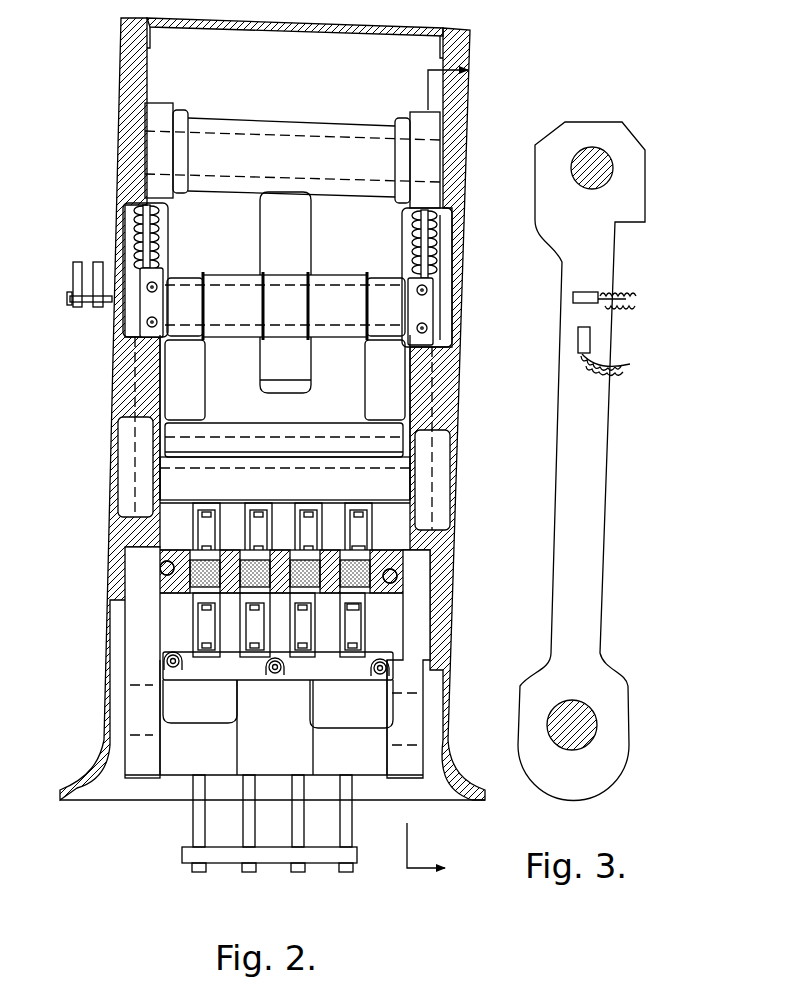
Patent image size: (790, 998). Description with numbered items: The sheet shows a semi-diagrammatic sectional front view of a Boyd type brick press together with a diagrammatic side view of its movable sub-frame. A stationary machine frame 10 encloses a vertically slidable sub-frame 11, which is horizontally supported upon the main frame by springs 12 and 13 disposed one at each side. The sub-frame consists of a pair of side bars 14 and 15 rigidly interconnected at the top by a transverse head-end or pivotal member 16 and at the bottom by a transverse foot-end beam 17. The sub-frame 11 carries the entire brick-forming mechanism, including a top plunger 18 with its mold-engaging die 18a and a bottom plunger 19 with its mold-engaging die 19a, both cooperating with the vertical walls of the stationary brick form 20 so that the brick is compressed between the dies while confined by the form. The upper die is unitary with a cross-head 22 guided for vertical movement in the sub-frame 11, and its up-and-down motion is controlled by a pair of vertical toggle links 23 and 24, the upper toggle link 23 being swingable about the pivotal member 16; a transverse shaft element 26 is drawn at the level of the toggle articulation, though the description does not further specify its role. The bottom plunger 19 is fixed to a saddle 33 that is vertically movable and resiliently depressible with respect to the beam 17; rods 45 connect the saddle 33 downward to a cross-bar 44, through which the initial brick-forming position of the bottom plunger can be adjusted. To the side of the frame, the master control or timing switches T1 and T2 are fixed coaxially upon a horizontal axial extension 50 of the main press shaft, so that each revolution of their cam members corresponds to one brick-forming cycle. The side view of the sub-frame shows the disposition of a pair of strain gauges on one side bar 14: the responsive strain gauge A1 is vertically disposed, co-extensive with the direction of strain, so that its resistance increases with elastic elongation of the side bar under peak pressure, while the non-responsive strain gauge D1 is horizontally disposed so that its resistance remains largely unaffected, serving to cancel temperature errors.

In FIG. 2, the machine frame 10 is at (117, 150).
In FIG. 2, the sub-frame 11 is at (241, 662).
In FIG. 3, the sub-frame 11 is at (609, 444).
In FIG. 2, the spring 12 is at (167, 237).
In FIG. 2, the spring 13 is at (408, 235).
In FIG. 2, the side bar 14 is at (143, 621).
In FIG. 3, the side bar 14 is at (598, 501).
In FIG. 2, the side bar 15 is at (403, 645).
In FIG. 2, the transverse member 16 is at (300, 137).
In FIG. 2, the beam 17 is at (186, 765).
In FIG. 2, the top plunger 18 is at (360, 570).
In FIG. 2, the mold-engaging die 18a is at (350, 568).
In FIG. 2, the bottom plunger 19 is at (343, 636).
In FIG. 2, the mold-engaging die 19a is at (358, 601).
In FIG. 2, the brick form 20 is at (360, 572).
In FIG. 2, the cross-head 22 is at (285, 417).
In FIG. 2, the upper toggle link 23 is at (252, 250).
In FIG. 2, the lower toggle link 24 is at (247, 369).
In FIG. 2, the cross shaft 26 is at (232, 285).
In FIG. 2, the saddle 33 is at (339, 681).
In FIG. 2, the cross-bar 44 is at (356, 863).
In FIG. 2, the rods 45 is at (299, 836).
In FIG. 2, the axial extension 50 is at (110, 307).
In FIG. 2, the timing switch T1 is at (67, 313).
In FIG. 2, the timing switch T2 is at (96, 316).
In FIG. 3, the non-responsive strain gauge D1 is at (585, 299).
In FIG. 3, the responsive strain gauge A1 is at (590, 344).